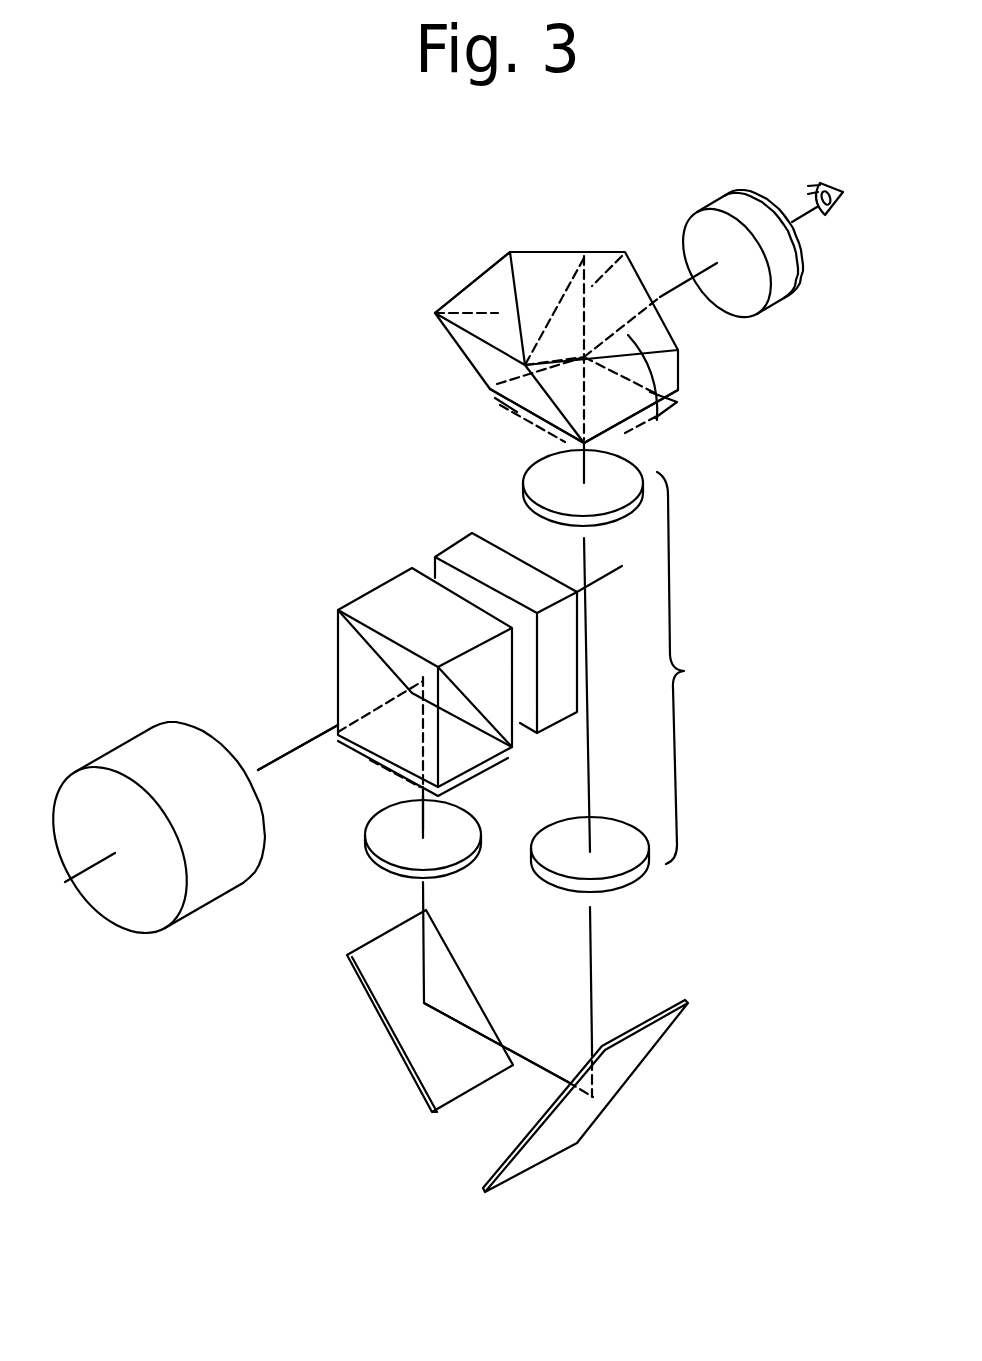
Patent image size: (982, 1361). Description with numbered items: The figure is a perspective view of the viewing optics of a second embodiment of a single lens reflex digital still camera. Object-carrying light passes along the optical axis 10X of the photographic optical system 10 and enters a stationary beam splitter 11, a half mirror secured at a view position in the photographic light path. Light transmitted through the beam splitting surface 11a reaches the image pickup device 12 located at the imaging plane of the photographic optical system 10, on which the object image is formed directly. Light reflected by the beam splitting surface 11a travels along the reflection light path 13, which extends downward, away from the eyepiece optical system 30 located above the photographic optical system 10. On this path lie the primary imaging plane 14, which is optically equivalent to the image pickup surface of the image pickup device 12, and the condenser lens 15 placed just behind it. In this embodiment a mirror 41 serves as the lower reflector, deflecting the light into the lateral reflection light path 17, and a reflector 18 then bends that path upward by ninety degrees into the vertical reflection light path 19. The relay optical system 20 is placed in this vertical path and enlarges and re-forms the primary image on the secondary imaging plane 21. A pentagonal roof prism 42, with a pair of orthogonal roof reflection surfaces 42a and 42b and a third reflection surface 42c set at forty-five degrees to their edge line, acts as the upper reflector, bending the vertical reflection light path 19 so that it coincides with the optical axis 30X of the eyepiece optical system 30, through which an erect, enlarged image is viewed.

The photographic optical system 10 is at (157, 735).
The optical axis of the photographic optical system 10X is at (318, 735).
The beam splitter 11 is at (393, 642).
The beam splitting surface 11a is at (380, 642).
The image pickup device 12 is at (463, 550).
The reflection light path 13 is at (420, 815).
The primary imaging plane 14 is at (475, 774).
The condenser lens 15 is at (365, 842).
The lateral reflection light path 17 is at (540, 1067).
The reflector 18 is at (548, 1157).
The vertical reflection light path 19 is at (593, 950).
The relay optical system 20 is at (689, 668).
The secondary imaging plane 21 is at (645, 450).
The eyepiece optical system 30 is at (812, 303).
The optical axis of the eyepiece optical system 30X is at (693, 302).
The mirror 41 is at (371, 1005).
The pentagonal roof prism 42 is at (549, 328).
The roof reflection surface 42a is at (620, 437).
The roof reflection surface 42b is at (492, 276).
The third reflection surface 42c is at (540, 398).